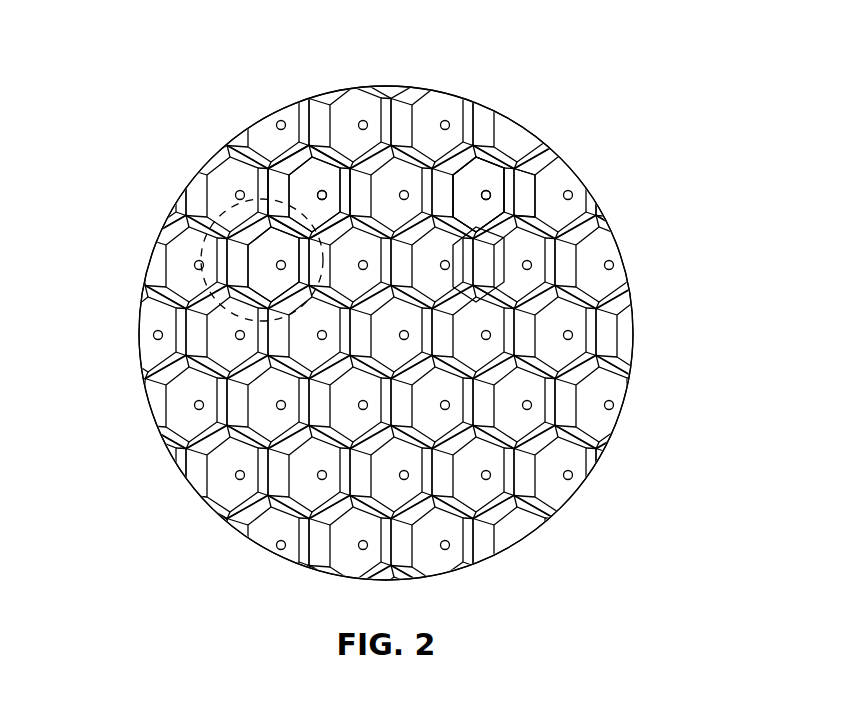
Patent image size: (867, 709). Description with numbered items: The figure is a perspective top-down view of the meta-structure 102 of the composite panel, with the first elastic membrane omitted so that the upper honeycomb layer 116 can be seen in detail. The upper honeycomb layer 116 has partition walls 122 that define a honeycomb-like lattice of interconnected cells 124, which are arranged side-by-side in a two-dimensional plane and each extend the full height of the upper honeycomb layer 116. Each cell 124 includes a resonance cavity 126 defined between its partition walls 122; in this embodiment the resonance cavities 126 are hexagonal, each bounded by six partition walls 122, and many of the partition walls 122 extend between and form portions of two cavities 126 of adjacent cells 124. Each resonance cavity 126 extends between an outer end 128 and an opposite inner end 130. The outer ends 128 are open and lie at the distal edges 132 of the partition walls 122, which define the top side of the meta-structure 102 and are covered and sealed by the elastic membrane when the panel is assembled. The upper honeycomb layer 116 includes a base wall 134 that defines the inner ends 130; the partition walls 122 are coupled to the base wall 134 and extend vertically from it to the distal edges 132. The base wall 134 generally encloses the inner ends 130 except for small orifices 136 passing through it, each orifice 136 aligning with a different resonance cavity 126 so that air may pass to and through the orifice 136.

The meta-structure 102 is at (163, 160).
The upper honeycomb layer 116 is at (581, 172).
The partition walls 122 is at (235, 226).
The cells 124 is at (205, 248).
The resonance cavity 126 is at (251, 291).
The outer end 128 is at (497, 239).
The inner end 130 is at (541, 203).
The distal edges 132 is at (447, 180).
The base wall 134 is at (306, 209).
The orifices 136 is at (318, 186).